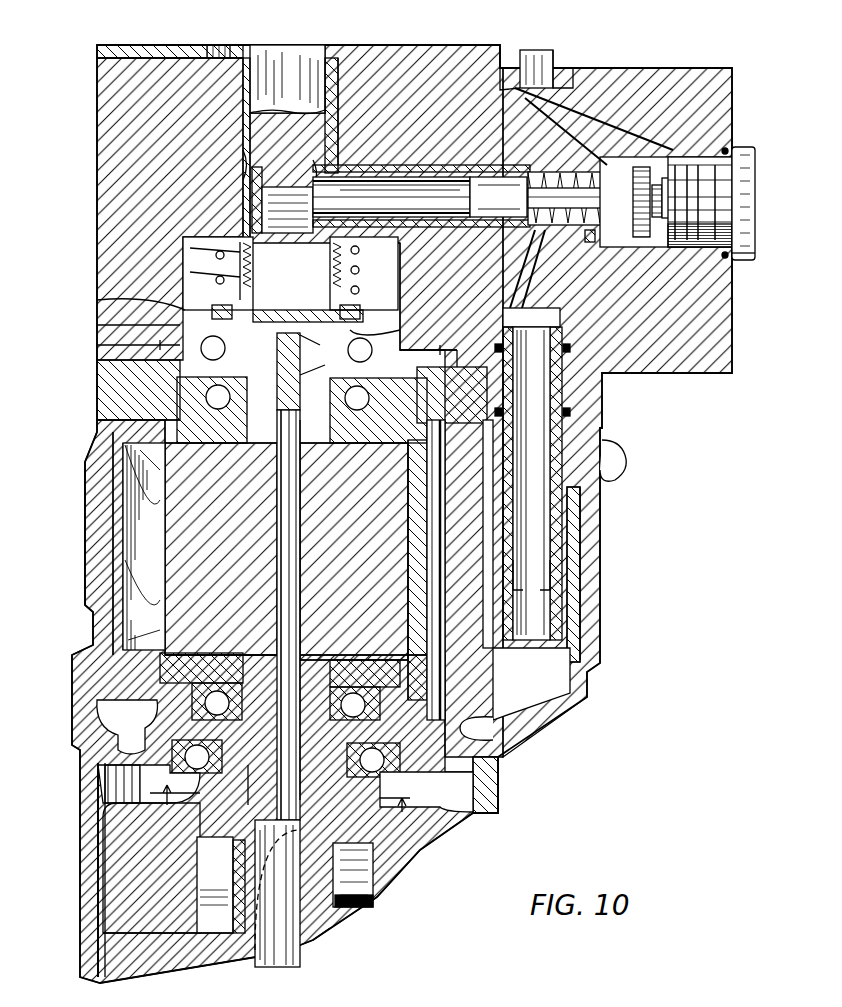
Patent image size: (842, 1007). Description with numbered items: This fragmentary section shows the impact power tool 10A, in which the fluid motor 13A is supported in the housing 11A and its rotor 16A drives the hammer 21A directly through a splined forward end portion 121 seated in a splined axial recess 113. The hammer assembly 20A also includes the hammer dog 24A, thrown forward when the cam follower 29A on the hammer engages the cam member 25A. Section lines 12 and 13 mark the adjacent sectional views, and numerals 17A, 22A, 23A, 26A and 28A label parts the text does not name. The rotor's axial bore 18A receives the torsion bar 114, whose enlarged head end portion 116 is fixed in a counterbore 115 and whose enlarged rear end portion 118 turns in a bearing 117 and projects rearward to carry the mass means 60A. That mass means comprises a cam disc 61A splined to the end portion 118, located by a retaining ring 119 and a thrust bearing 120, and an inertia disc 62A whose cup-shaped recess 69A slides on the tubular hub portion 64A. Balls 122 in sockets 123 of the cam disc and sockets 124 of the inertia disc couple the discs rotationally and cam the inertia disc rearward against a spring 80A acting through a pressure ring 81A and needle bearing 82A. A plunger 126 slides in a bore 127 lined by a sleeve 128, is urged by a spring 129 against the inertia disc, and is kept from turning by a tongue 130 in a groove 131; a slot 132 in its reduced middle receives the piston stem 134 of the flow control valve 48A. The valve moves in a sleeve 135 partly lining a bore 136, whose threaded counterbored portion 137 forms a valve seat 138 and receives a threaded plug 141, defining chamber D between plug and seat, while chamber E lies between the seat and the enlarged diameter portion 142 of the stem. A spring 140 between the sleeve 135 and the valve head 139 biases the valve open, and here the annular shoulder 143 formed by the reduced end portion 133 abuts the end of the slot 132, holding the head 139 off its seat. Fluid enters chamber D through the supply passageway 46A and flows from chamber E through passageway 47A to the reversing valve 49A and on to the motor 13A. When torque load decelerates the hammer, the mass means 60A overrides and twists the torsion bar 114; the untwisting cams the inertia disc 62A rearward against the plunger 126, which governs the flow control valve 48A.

The impact power tool 10A is at (78, 498).
The housing 11A is at (105, 440).
The section line 12 is at (285, 806).
The fluid motor 13 is at (292, 391).
The fluid motor 13A is at (118, 573).
The rotor 16A is at (180, 558).
The rotor body 17A is at (190, 445).
The axial bore 18A is at (300, 610).
The hammer assembly 20A is at (100, 908).
The hammer 21A is at (118, 845).
The bearing housing 22A is at (365, 690).
The passage 23A is at (172, 750).
The hammer dog 24A is at (125, 957).
The cam member 25A is at (328, 930).
The drum 26A is at (280, 955).
The pocket 28A is at (200, 893).
The cam follower 29A is at (375, 905).
The fluid supply passageway 46A is at (580, 100).
The passageway 47A is at (562, 290).
The flow control valve 48A is at (752, 255).
The reversing valve 49A is at (580, 520).
The mass means 60A is at (135, 325).
The cam disc 61A is at (212, 410).
The inertia disc 62A is at (405, 333).
The tubular hub portion 64A is at (348, 276).
The recess 69A is at (225, 300).
The spring 80A is at (192, 252).
The pressure ring 81A is at (185, 308).
The needle bearing 82A is at (428, 318).
The splined axial recess 113 is at (258, 745).
The torsion bar 114 is at (277, 610).
The counterbore 115 is at (258, 822).
The enlarged head end portion 116 is at (350, 800).
The bearing 117 is at (280, 395).
The enlarged rear end portion 118 is at (275, 350).
The retaining ring 119 is at (305, 380).
The thrust bearing 120 is at (378, 410).
The splined forward end portion 121 is at (252, 795).
The balls 122 is at (355, 312).
The sockets 123 is at (444, 385).
The sockets 124 is at (175, 340).
The plunger 126 is at (243, 105).
The bore 127 is at (243, 160).
The sleeve 128 is at (356, 111).
The spring 129 is at (398, 296).
The longitudinal tongue 130 is at (262, 70).
The longitudinal groove 131 is at (330, 60).
The slot 132 is at (258, 175).
The reduced end portion 133 is at (305, 215).
The piston stem 134 is at (418, 178).
The sleeve 135 is at (495, 178).
The bore 136 is at (400, 165).
The counterbored portion 137 is at (657, 218).
The annular valve seat 138 is at (640, 167).
The valve head 139 is at (668, 220).
The spring 140 is at (592, 242).
The threaded plug 141 is at (700, 165).
The enlarged diameter portion 142 is at (530, 178).
The annular shoulder 143 is at (325, 165).
The chamber D is at (601, 126).
The chamber E is at (529, 269).